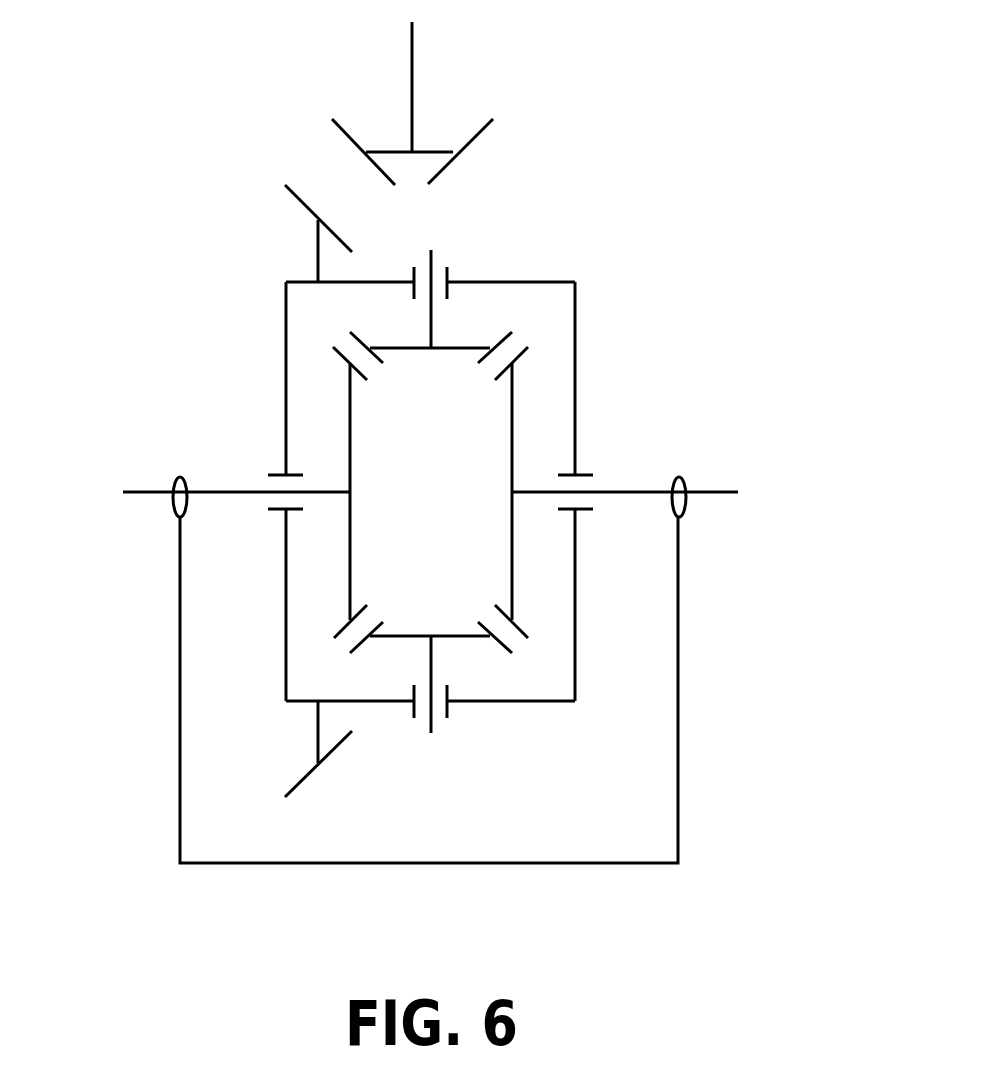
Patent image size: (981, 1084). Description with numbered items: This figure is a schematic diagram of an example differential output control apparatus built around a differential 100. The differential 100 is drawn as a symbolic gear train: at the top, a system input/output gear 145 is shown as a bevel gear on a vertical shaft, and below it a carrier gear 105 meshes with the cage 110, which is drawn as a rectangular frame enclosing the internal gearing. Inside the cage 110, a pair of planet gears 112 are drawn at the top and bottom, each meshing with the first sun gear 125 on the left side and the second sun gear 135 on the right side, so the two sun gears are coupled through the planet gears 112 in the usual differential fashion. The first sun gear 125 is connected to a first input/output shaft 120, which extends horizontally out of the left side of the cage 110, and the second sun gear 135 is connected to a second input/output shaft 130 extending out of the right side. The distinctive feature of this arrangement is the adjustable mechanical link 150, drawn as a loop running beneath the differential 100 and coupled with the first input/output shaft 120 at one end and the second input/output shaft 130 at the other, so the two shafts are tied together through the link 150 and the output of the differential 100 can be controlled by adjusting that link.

The differential 100 is at (551, 457).
The carrier gear 105 is at (273, 490).
The cage 110 is at (430, 491).
The planet gears 112 is at (430, 492).
The first input/output shaft 120 is at (201, 467).
The first sun gear 125 is at (397, 491).
The second input/output shaft 130 is at (660, 467).
The second sun gear 135 is at (448, 491).
The input/output gear 145 is at (482, 109).
The adjustable mechanical link 150 is at (603, 884).